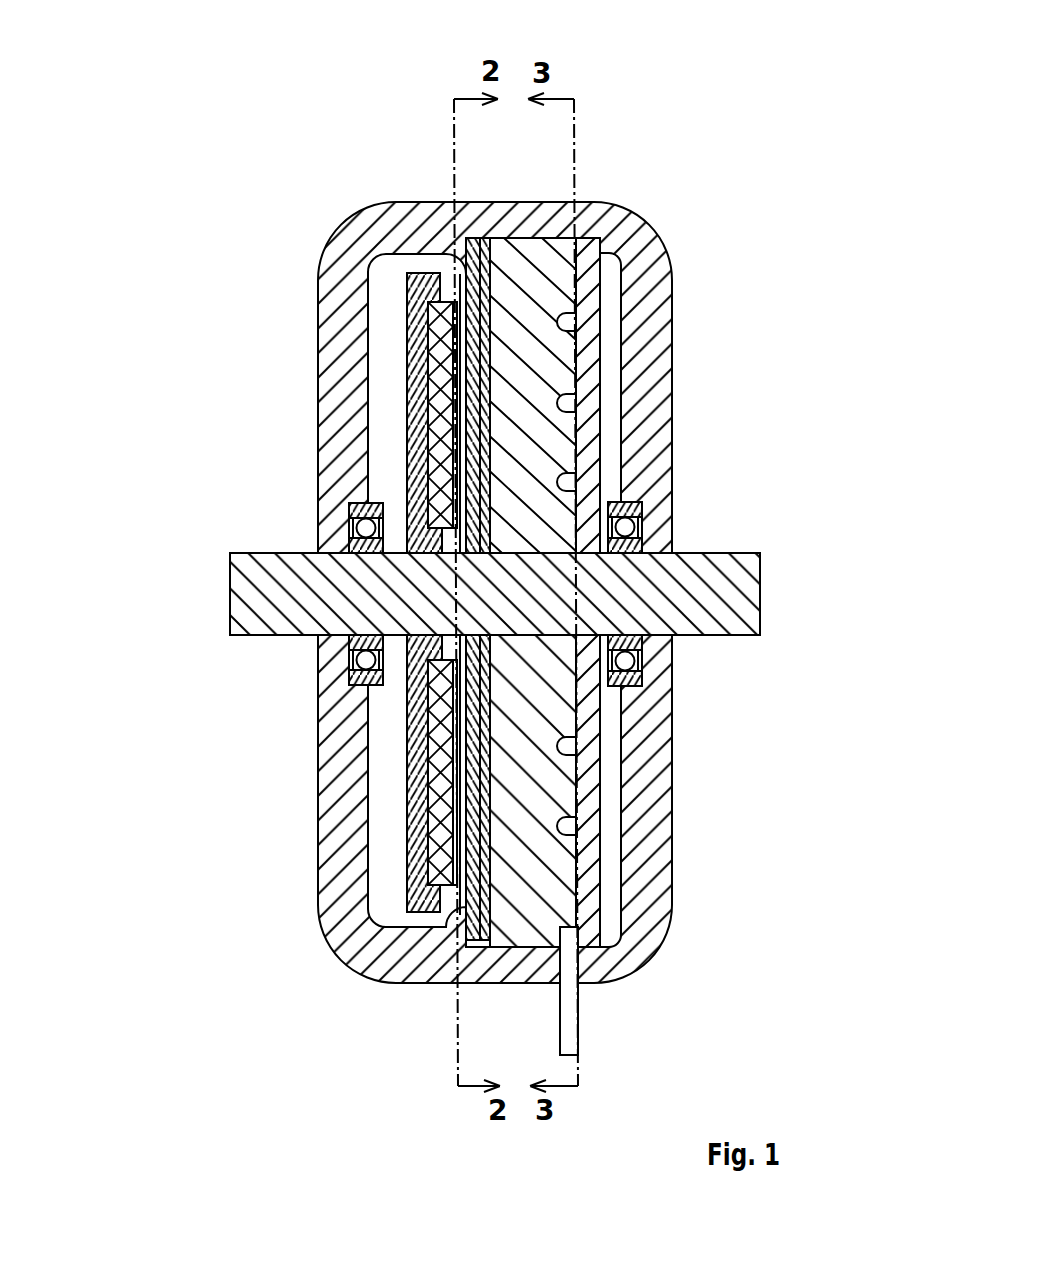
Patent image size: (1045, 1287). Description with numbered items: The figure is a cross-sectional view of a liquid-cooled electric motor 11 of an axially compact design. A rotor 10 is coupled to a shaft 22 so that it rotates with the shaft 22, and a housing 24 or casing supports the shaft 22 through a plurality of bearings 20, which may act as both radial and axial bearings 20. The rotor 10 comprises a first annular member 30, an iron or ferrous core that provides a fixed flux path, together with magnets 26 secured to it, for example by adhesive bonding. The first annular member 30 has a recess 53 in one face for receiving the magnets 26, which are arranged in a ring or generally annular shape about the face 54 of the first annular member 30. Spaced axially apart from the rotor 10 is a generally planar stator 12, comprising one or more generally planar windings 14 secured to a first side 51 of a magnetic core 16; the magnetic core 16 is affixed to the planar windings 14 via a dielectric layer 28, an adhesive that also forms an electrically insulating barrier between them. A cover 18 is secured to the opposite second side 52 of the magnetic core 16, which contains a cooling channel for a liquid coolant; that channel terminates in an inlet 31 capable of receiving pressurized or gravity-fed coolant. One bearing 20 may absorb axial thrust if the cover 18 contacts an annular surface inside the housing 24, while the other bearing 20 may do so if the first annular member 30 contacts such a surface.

The rotor 10 is at (269, 486).
The motor 11 is at (506, 557).
The stator 12 is at (546, 576).
The planar windings 14 is at (472, 245).
The magnetic core 16 is at (563, 250).
The cover 18 is at (597, 357).
The bearings 20 is at (348, 506).
The shaft 22 is at (710, 553).
The housing 24 is at (665, 847).
The magnets 26 is at (432, 405).
The dielectric layer 28 is at (487, 940).
The first annular member 30 is at (408, 298).
The inlet 31 is at (568, 1029).
The first side 51 is at (449, 282).
The second side 52 is at (578, 433).
The recess 53 is at (407, 343).
The face 54 is at (442, 530).